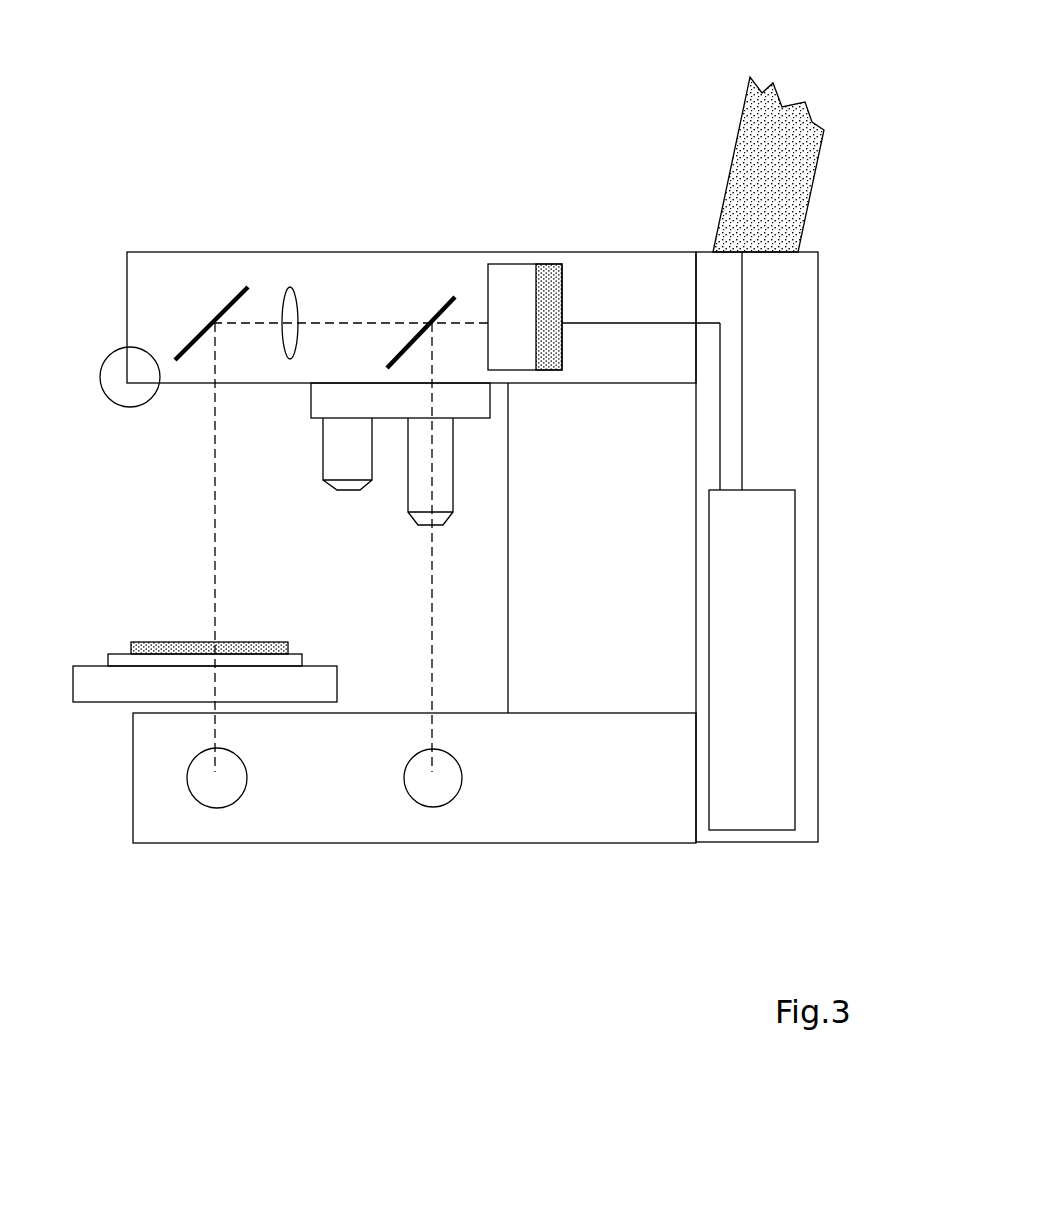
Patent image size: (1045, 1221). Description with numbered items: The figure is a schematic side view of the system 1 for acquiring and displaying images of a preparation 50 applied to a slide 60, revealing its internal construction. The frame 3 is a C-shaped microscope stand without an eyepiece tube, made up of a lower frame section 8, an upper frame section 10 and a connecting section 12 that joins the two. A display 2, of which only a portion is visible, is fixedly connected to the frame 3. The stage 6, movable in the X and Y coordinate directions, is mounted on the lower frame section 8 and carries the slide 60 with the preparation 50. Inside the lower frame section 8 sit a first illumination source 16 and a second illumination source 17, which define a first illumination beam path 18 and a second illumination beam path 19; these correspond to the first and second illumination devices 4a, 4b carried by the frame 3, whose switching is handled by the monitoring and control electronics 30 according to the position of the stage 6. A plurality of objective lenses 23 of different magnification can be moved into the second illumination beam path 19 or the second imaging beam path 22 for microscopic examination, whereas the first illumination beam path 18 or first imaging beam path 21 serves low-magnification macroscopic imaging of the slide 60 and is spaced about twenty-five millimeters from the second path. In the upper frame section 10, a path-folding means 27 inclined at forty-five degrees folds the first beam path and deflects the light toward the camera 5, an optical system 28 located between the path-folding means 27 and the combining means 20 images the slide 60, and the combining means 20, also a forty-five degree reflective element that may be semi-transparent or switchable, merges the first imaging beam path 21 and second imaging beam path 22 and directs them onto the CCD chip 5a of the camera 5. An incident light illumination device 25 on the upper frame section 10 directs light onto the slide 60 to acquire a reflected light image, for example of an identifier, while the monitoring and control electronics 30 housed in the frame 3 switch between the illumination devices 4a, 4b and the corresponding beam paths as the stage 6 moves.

The system 1 is at (475, 190).
The display 2 is at (732, 173).
The frame 3 is at (818, 395).
The first illumination device 4a is at (247, 778).
The second illumination device 4b is at (462, 775).
The camera 5 is at (507, 270).
The CCD chip 5a is at (553, 307).
The stage 6 is at (93, 693).
The lower frame section 8 is at (550, 843).
The upper frame section 10 is at (197, 252).
The connecting section 12 is at (636, 567).
The first illumination source 16 is at (212, 800).
The second illumination source 17 is at (435, 793).
The first illumination beam path 18 is at (215, 730).
The second illumination beam path 19 is at (430, 728).
The combining means 20 is at (437, 312).
The first imaging beam path 21 is at (212, 528).
The second imaging beam path 22 is at (432, 590).
The objective lenses 23 is at (323, 470).
The incident light illumination device 25 is at (116, 357).
The path-folding means 27 is at (197, 333).
The optical system 28 is at (298, 307).
The monitoring and control electronics 30 is at (780, 663).
The preparation 50 is at (273, 642).
The slide 60 is at (123, 662).